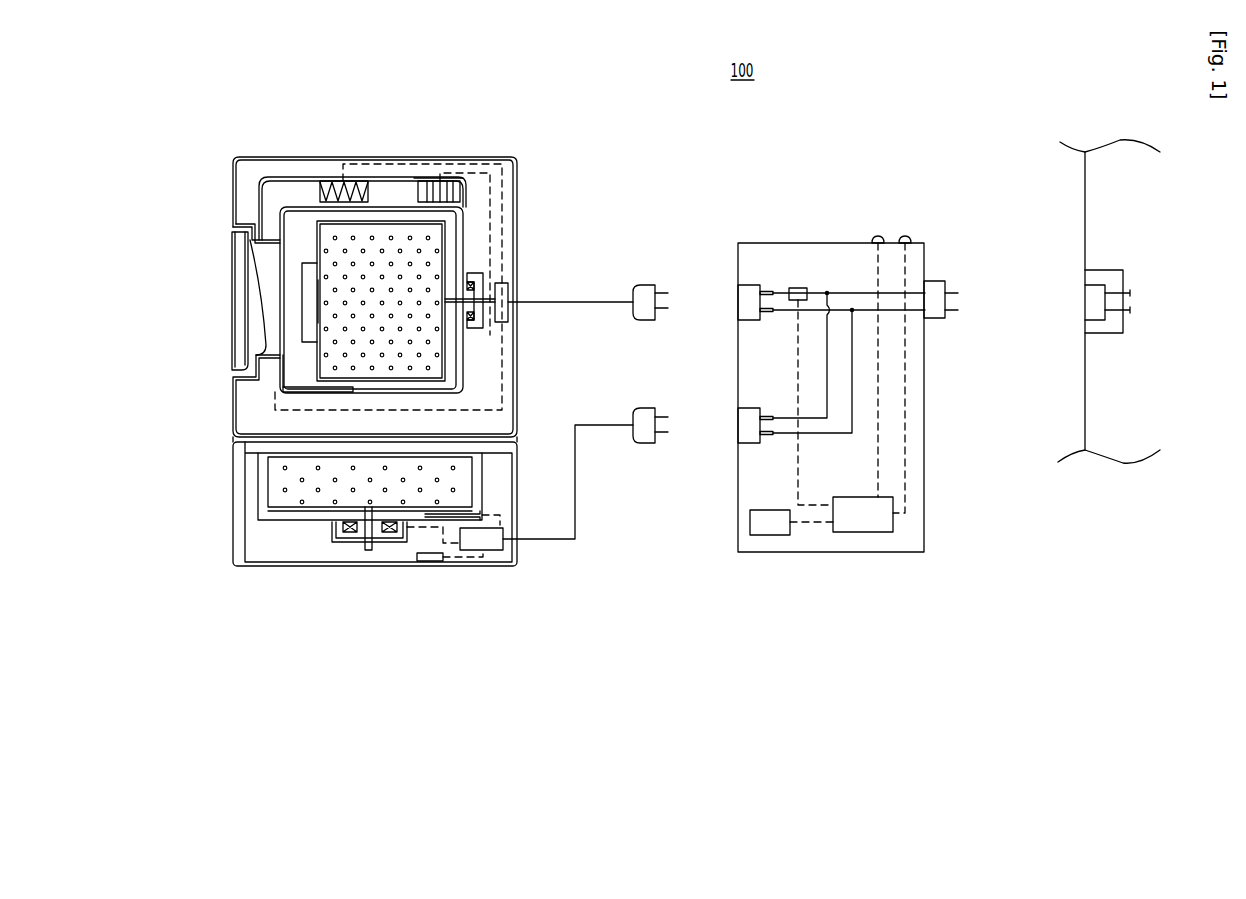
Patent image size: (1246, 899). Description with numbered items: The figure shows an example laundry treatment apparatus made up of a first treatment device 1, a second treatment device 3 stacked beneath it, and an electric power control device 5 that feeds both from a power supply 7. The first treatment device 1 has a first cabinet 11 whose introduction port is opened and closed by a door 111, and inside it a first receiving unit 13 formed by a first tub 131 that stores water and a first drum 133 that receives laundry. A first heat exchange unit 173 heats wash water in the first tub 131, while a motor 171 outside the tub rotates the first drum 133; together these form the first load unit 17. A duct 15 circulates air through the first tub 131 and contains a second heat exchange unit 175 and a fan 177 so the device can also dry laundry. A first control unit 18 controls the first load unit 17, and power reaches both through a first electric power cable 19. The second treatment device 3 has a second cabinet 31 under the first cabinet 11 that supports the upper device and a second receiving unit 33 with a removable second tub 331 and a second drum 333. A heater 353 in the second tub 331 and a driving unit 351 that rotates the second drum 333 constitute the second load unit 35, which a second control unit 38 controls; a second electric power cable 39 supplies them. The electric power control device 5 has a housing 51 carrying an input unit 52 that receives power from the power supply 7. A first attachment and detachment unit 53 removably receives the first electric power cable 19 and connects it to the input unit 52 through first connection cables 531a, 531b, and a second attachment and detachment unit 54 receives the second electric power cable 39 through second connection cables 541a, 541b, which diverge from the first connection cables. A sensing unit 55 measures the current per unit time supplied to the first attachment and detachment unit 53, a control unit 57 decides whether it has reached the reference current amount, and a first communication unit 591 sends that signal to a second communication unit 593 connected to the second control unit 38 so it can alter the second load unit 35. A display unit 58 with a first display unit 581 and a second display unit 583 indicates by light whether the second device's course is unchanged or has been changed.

The first treatment device 1 is at (222, 305).
The first cabinet 11 is at (517, 397).
The door 111 is at (235, 245).
The first receiving unit 13 is at (193, 145).
The first tub 131 is at (295, 228).
The first drum 133 is at (328, 238).
The duct 15 is at (293, 190).
The first load unit 17 is at (575, 143).
The motor 171 is at (477, 273).
The first heat exchange unit 173 is at (290, 398).
The second heat exchange unit 175 is at (370, 190).
The fan 177 is at (460, 191).
The first control unit 18 is at (508, 288).
The first electric power cable 19 is at (643, 290).
The second treatment device 3 is at (218, 496).
The second cabinet 31 is at (517, 558).
The second receiving unit 33 is at (171, 527).
The second tub 331 is at (283, 521).
The second drum 333 is at (278, 502).
The second load unit 35 is at (392, 598).
The driving unit 351 is at (350, 532).
The heater 353 is at (434, 517).
The second control unit 38 is at (495, 548).
The second electric power cable 39 is at (643, 440).
The second communication unit 593 is at (442, 557).
The electric power control device 5 is at (806, 210).
The housing 51 is at (770, 253).
The input unit 52 is at (938, 283).
The first attachment and detachment unit 53 is at (745, 297).
The second attachment and detachment unit 54 is at (742, 435).
The sensing unit 55 is at (802, 288).
The first connection cable 531a is at (893, 294).
The first connection cable 531b is at (883, 311).
The second connection cable 541a is at (827, 385).
The second connection cable 541b is at (853, 420).
The control unit 57 is at (870, 525).
The display unit 58 is at (935, 193).
The first display unit 581 is at (880, 237).
The second display unit 583 is at (907, 237).
The first communication unit 591 is at (770, 527).
The power supply 7 is at (1090, 295).